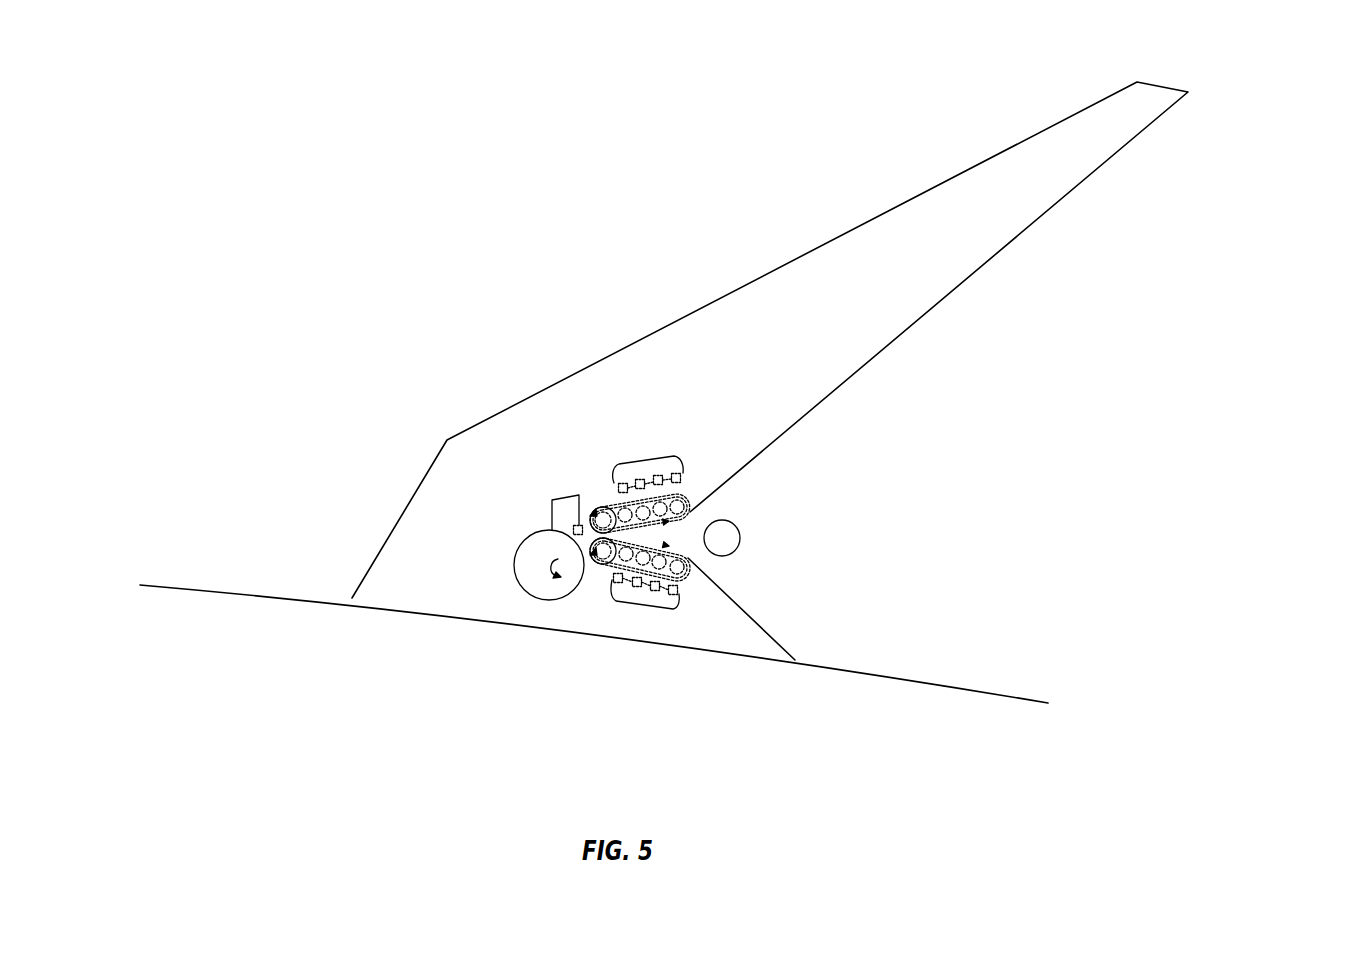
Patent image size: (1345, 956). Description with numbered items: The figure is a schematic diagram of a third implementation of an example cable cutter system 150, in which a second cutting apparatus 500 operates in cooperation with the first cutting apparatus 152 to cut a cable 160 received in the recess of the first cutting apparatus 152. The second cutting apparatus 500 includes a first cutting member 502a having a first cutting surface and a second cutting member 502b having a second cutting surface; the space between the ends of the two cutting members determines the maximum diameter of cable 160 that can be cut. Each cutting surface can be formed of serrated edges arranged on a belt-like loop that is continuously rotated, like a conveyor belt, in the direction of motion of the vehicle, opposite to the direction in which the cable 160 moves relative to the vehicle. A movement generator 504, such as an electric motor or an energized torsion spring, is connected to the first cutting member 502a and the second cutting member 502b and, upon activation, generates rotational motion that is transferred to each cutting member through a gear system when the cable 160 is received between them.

The cable cutter system 150 is at (1244, 77).
The first cutting apparatus 152 is at (1140, 133).
The second cutting apparatus 500 is at (562, 407).
The first cutting member 502a is at (579, 495).
The second cutting member 502b is at (682, 577).
The movement generator 504 is at (513, 559).
The cable 160 is at (740, 533).